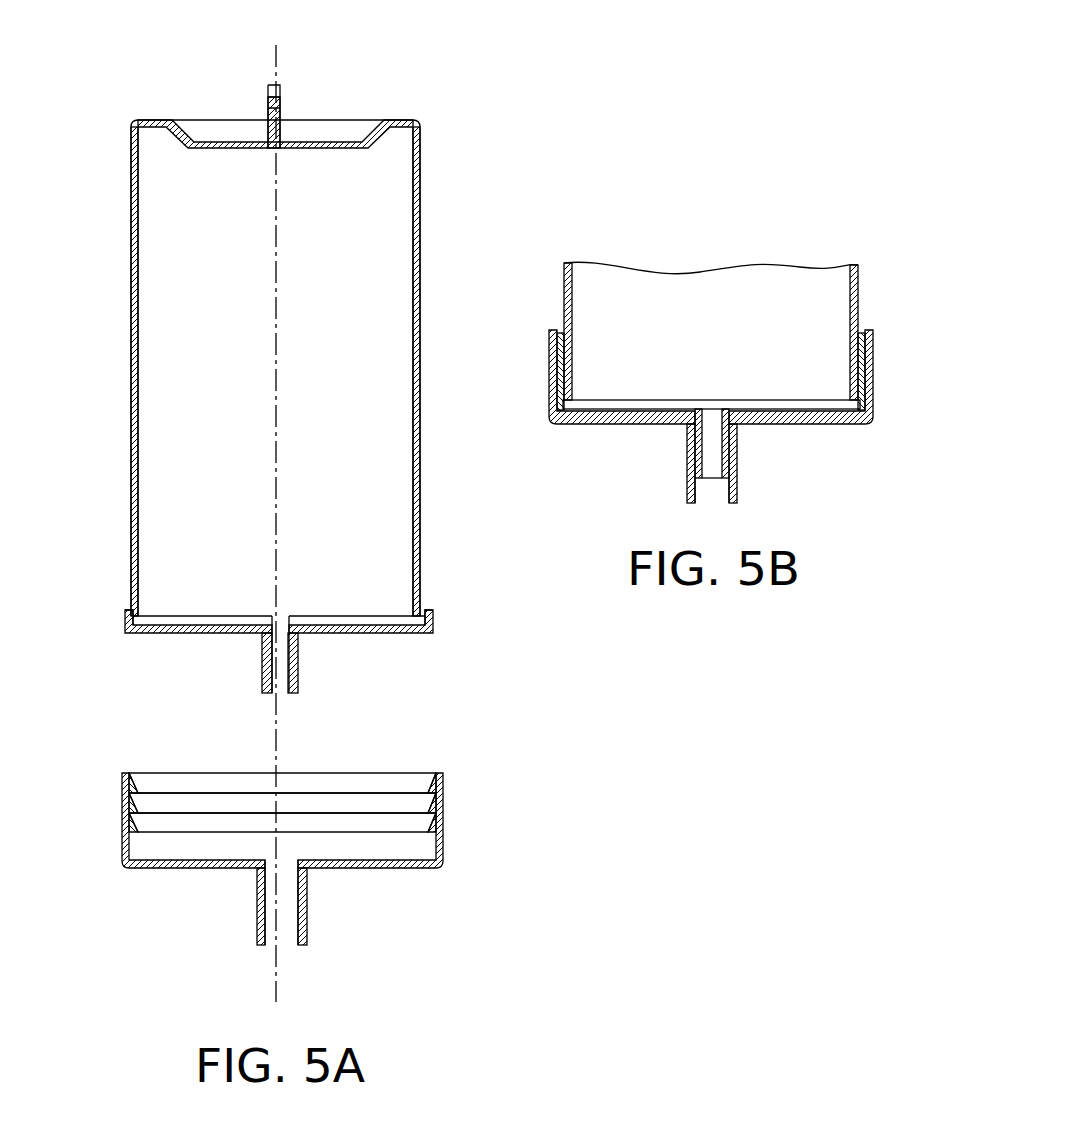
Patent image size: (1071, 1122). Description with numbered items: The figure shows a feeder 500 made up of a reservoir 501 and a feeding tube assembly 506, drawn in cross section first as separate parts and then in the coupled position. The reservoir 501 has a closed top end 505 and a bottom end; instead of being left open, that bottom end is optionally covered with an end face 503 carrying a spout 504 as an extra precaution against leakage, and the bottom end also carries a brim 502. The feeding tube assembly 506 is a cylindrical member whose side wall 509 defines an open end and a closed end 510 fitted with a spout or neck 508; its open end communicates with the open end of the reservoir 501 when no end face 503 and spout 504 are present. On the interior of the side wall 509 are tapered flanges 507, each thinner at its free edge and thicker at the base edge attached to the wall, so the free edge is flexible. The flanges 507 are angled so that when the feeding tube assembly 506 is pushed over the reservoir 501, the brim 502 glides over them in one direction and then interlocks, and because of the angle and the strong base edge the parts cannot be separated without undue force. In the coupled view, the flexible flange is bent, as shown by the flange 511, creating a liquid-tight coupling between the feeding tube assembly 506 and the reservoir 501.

In FIG. 5A, the feeder 500 is at (478, 85).
In FIG. 5A, the reservoir 501 is at (420, 240).
In FIG. 5B, the reservoir 501 is at (563, 293).
In FIG. 5A, the brim 502 is at (435, 618).
In FIG. 5A, the end face 503 is at (410, 632).
In FIG. 5A, the spout 504 is at (298, 680).
In FIG. 5B, the spout 504 is at (723, 462).
In FIG. 5A, the closed top end 505 is at (335, 128).
In FIG. 5A, the feeding tube assembly 506 is at (473, 768).
In FIG. 5A, the tapered flange 507 is at (128, 790).
In FIG. 5A, the side wall 509 is at (130, 840).
In FIG. 5B, the side wall 509 is at (873, 368).
In FIG. 5A, the spout or neck 508 is at (308, 920).
In FIG. 5B, the spout or neck 508 is at (737, 490).
In FIG. 5A, the closed end 510 is at (185, 868).
In FIG. 5B, the bent flange 511 is at (550, 360).